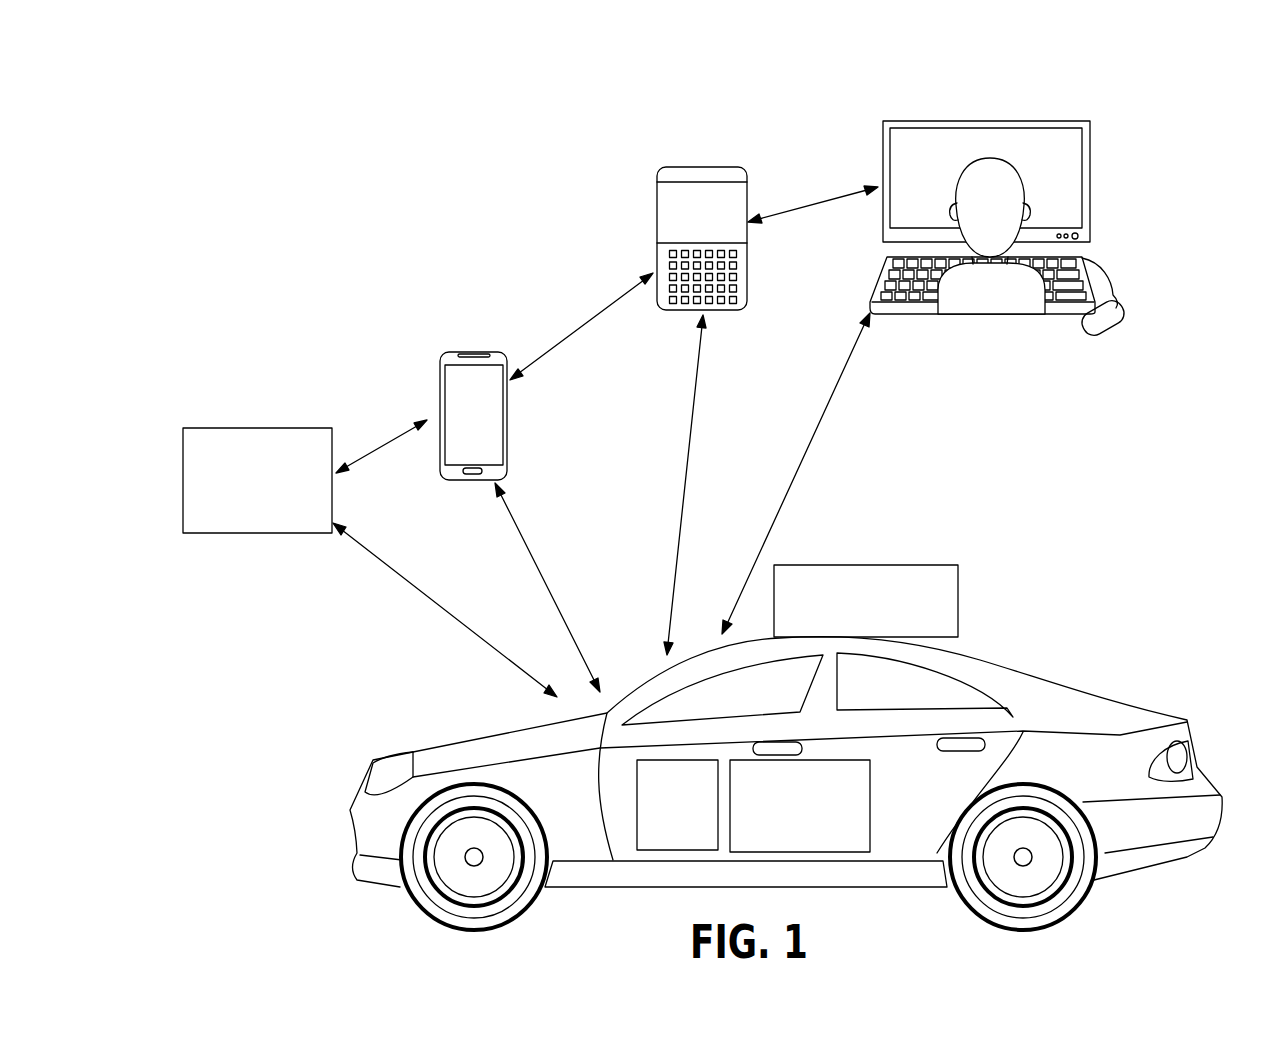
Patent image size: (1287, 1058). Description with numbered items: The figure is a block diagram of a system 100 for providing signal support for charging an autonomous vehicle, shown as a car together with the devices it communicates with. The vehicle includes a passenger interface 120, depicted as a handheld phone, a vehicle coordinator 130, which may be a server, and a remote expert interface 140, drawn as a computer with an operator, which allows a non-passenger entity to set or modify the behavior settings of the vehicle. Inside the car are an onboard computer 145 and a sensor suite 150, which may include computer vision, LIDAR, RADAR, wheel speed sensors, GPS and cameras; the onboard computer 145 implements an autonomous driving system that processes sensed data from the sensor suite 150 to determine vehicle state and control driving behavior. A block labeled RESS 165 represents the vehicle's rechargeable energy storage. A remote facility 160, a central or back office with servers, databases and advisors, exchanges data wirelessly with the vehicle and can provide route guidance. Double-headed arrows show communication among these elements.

The system 100 is at (1182, 125).
The passenger interface 120 is at (460, 350).
The vehicle coordinator 130 is at (683, 165).
The remote expert interface 140 is at (913, 120).
The onboard computer 145 is at (800, 806).
The sensor suite 150 is at (866, 601).
The remote facility 160 is at (257, 480).
The rechargeable energy storage system (RESS) 165 is at (677, 805).